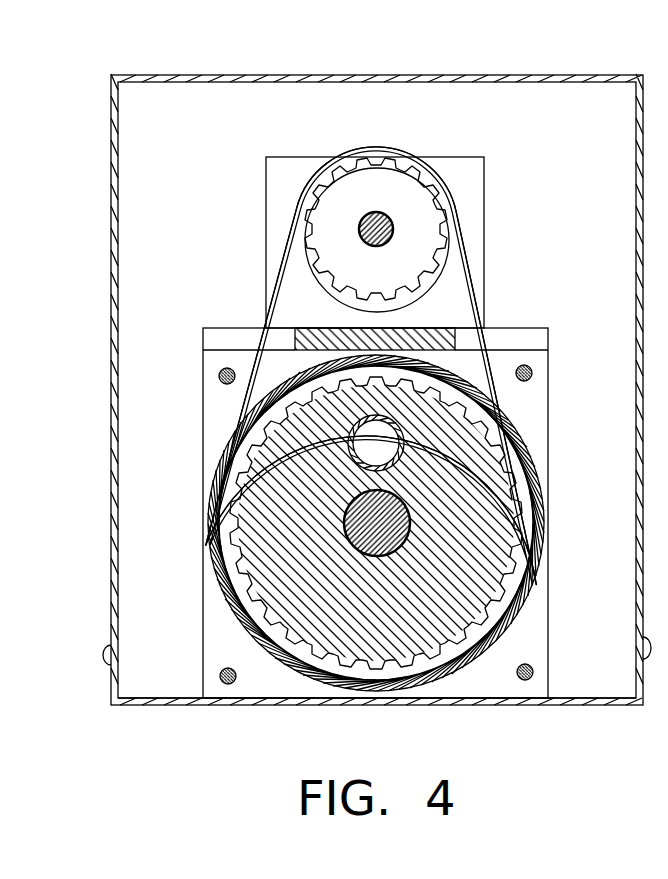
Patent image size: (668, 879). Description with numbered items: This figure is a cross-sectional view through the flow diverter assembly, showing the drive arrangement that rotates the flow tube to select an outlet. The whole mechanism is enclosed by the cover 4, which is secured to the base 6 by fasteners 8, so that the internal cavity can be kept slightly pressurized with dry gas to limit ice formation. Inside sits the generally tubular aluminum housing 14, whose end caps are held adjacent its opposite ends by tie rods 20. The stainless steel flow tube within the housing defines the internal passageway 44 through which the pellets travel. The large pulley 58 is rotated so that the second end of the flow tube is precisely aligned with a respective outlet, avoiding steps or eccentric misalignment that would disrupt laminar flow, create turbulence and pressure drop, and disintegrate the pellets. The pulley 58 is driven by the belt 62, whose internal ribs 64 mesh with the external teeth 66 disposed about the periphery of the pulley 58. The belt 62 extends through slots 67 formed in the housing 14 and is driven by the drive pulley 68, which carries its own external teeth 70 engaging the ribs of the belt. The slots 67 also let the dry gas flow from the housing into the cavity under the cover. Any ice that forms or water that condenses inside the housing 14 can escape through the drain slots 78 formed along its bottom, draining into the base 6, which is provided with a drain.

The cover 4 is at (465, 75).
The base 6 is at (605, 703).
The fasteners 8 is at (103, 652).
The housing 14 is at (208, 498).
The tie rods 20 is at (218, 377).
The internal passageway 44 is at (390, 454).
The pulley 58 is at (500, 522).
The belt 62 is at (470, 255).
The internal ribs 64 is at (485, 325).
The external teeth 66 is at (490, 417).
The slots 67 is at (233, 440).
The drive pulley 68 is at (390, 197).
The external teeth 70 is at (392, 297).
The drain slots 78 is at (377, 692).